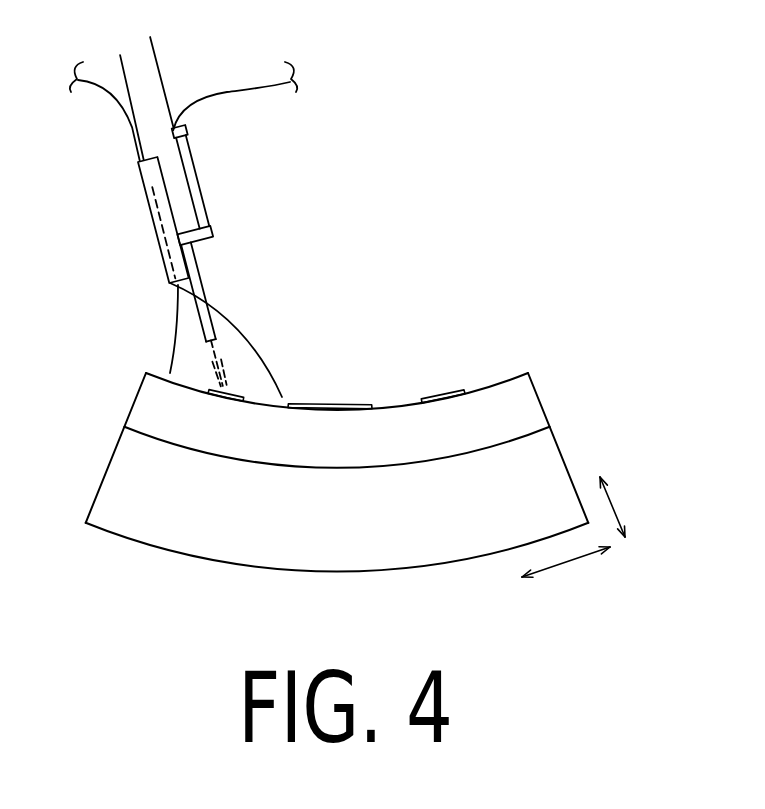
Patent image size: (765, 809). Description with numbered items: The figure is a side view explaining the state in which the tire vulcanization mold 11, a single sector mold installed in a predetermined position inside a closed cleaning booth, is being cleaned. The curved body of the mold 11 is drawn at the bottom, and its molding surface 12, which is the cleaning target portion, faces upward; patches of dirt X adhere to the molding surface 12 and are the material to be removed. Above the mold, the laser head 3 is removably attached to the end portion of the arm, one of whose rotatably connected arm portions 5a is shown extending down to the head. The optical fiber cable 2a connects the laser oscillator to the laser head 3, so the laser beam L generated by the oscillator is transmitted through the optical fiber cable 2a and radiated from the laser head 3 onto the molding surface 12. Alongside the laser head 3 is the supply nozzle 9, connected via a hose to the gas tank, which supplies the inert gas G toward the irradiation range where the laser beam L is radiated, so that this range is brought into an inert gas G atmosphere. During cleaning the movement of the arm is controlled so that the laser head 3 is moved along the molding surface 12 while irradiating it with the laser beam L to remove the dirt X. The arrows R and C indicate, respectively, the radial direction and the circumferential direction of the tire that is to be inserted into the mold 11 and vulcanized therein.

The arm portion 5a is at (153, 92).
The optical fiber cable 2a is at (220, 97).
The supply nozzle 9 is at (150, 180).
The inert gas G is at (160, 218).
The laser head 3 is at (198, 275).
The laser beam L is at (232, 332).
The tire vulcanization mold 11 is at (110, 457).
The molding surface 12 is at (503, 378).
The dirt X is at (240, 392).
The radial direction R is at (620, 507).
The circumferential direction C is at (566, 572).